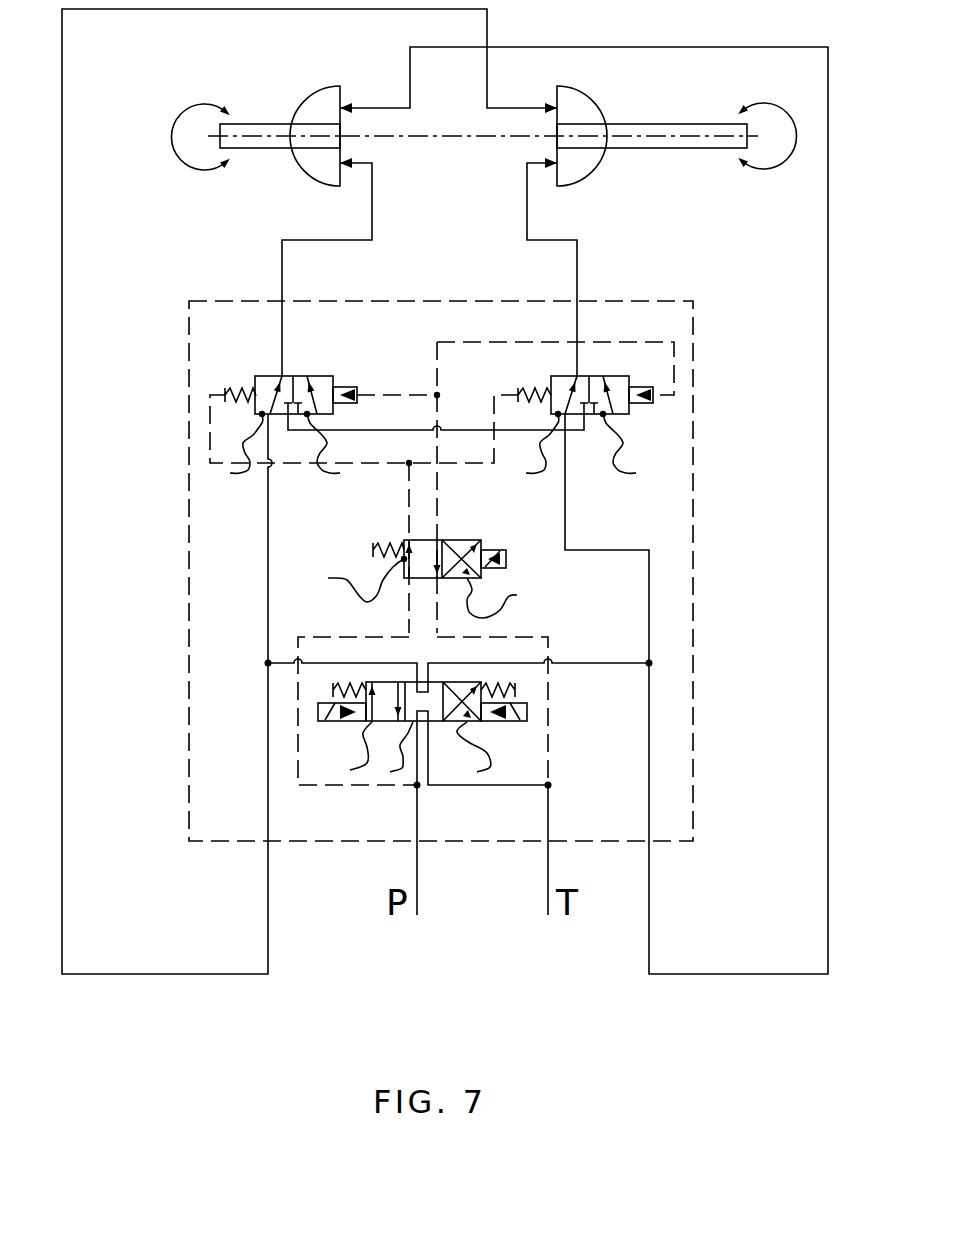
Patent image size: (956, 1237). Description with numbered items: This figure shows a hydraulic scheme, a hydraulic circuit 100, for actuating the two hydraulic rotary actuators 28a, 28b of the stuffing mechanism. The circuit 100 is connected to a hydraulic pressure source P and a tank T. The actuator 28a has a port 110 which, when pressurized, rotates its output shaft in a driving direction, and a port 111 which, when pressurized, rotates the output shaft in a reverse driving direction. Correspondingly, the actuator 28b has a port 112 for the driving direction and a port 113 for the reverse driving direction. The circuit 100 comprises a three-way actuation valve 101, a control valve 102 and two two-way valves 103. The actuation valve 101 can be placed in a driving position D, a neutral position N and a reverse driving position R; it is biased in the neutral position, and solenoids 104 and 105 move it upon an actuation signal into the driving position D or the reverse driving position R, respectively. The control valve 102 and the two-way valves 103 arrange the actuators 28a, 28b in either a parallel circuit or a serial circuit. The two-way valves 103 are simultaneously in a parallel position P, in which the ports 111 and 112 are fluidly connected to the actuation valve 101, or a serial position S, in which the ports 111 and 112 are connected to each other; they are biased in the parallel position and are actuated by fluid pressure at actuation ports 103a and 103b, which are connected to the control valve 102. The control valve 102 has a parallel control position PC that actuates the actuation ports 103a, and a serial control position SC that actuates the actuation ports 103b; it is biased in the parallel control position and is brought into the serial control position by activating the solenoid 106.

The hydraulic circuit 100 is at (227, 988).
The three-way actuation valve 101 is at (434, 682).
The control valve 102 is at (480, 540).
The two-way valves 103 is at (293, 376).
The actuation port 103a is at (255, 405).
The actuation port 103b is at (343, 385).
The solenoid 104 is at (342, 720).
The solenoid 105 is at (505, 720).
The solenoid 106 is at (505, 559).
The port 110 is at (556, 108).
The port 111 is at (557, 163).
The port 112 is at (341, 163).
The port 113 is at (341, 109).
The hydraulic rotary actuator 28a is at (581, 136).
The hydraulic rotary actuator 28b is at (316, 137).